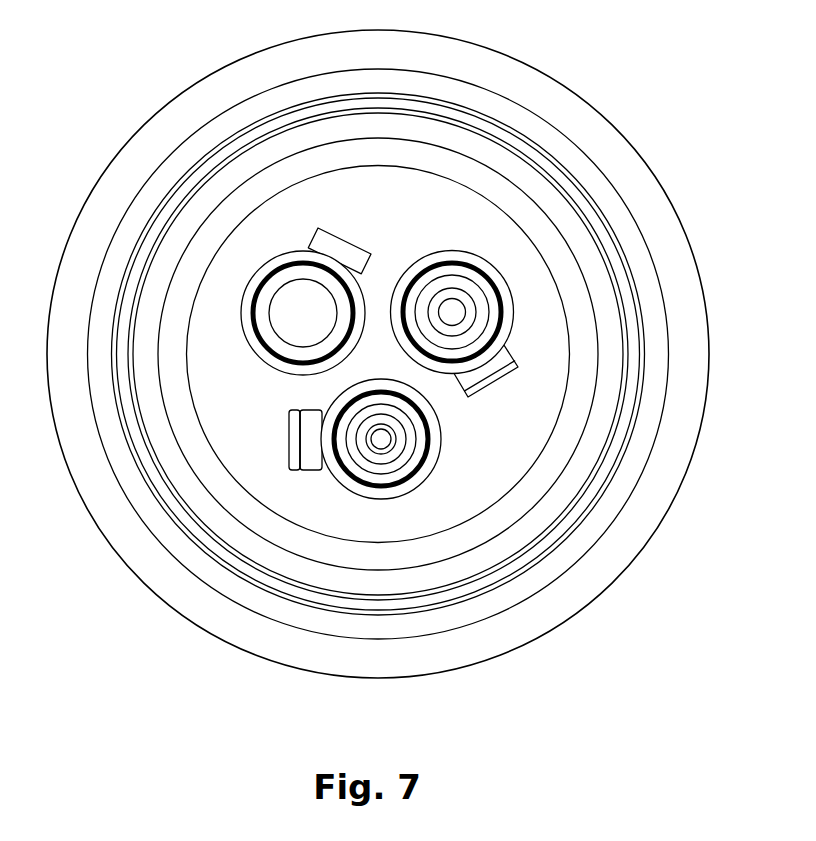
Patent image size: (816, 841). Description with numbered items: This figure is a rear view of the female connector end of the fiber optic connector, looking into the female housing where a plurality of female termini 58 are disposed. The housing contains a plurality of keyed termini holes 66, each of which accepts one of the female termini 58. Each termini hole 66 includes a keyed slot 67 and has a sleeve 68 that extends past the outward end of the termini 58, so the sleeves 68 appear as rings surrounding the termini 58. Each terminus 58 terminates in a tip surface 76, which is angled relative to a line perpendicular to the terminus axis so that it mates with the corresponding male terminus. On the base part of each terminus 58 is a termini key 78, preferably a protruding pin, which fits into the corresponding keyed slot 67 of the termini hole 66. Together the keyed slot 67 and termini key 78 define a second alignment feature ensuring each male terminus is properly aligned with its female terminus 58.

The female termini 58 is at (495, 315).
The keyed termini hole 66 is at (424, 199).
The keyed slot 67 is at (88, 570).
The sleeve 68 is at (256, 351).
The tip surface 76 is at (485, 555).
The termini key 78 is at (313, 438).